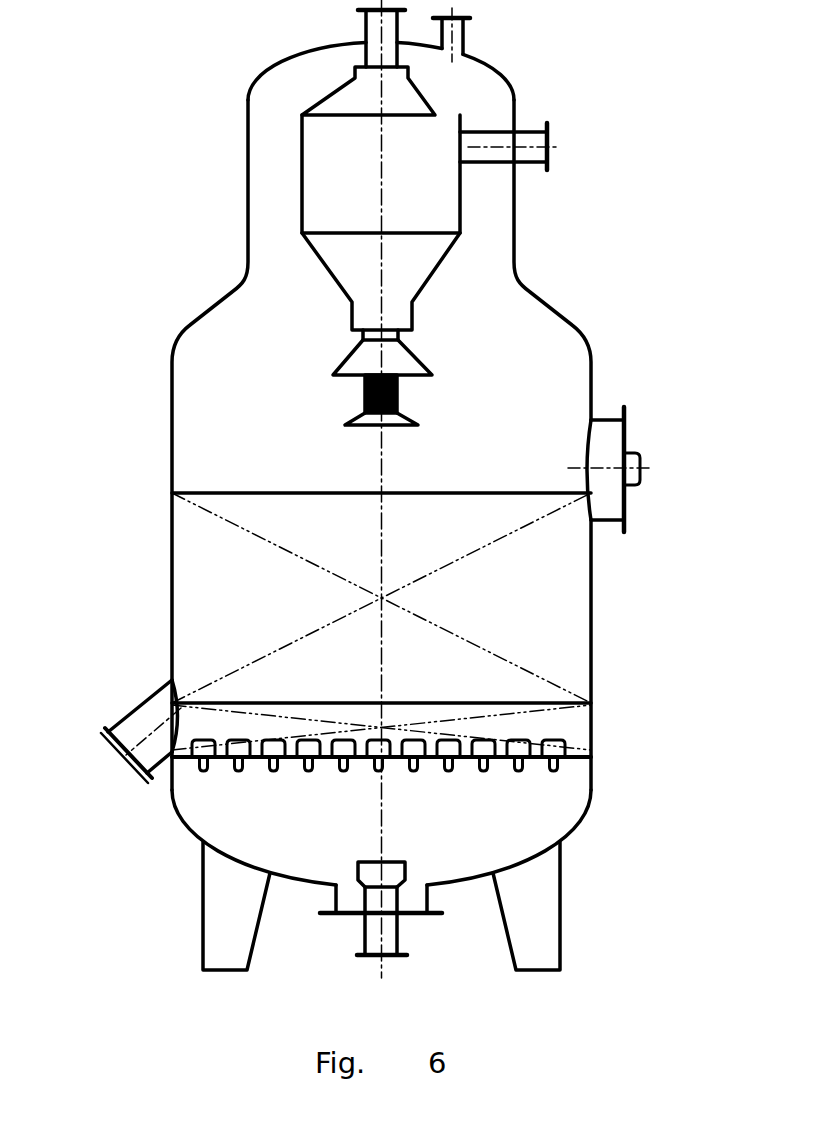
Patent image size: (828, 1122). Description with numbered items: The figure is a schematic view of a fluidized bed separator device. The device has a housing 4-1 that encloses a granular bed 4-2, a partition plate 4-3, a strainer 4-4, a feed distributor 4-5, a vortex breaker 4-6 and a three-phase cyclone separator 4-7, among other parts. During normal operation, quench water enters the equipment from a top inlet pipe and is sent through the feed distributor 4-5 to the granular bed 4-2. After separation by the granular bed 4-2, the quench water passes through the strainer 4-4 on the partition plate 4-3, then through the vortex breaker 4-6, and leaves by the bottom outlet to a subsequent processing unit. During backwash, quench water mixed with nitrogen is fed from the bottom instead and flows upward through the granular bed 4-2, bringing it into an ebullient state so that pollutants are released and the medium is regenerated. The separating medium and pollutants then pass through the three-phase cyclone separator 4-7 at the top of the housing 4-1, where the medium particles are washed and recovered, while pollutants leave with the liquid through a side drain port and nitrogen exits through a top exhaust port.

The housing 4-1 is at (175, 353).
The granular bed 4-2 is at (227, 568).
The partition plate 4-3 is at (202, 760).
The strainer 4-4 is at (567, 753).
The feed distributor 4-5 is at (402, 412).
The vortex breaker 4-6 is at (405, 870).
The three-phase cyclone separator 4-7 is at (397, 200).